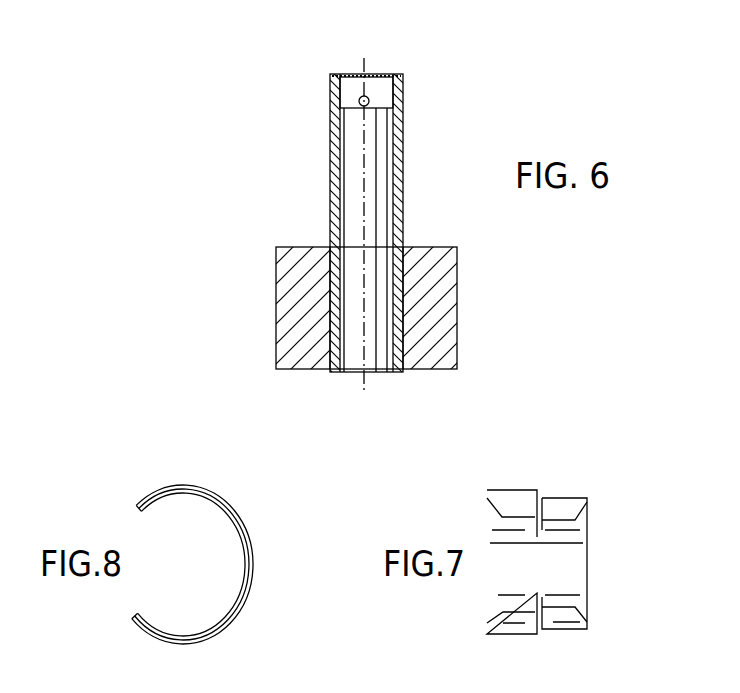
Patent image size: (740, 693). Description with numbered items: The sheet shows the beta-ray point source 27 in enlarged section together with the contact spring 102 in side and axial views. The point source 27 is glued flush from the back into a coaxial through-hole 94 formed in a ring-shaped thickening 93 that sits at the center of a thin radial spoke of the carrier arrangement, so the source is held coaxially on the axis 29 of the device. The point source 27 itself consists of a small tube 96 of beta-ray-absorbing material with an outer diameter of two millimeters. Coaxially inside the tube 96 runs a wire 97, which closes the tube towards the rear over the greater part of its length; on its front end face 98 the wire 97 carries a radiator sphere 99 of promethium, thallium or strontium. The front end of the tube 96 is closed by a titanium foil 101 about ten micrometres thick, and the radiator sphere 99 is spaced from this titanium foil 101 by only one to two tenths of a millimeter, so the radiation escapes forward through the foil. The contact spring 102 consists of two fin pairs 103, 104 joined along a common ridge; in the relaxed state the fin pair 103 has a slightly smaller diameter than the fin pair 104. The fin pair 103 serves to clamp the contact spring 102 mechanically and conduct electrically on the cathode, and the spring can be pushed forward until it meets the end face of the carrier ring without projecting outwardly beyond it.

In FIG. 6, the point source 27 is at (318, 84).
In FIG. 6, the axis 29 is at (372, 388).
In FIG. 6, the ring-shaped thickening 93 is at (298, 300).
In FIG. 6, the through-hole 94 is at (328, 323).
In FIG. 6, the tube 96 is at (331, 133).
In FIG. 6, the wire 97 is at (373, 188).
In FIG. 6, the front end face 98 is at (382, 108).
In FIG. 6, the radiator sphere 99 is at (368, 96).
In FIG. 6, the titanium foil 101 is at (347, 73).
In FIG. 7, the contact spring 102 is at (573, 489).
In FIG. 8, the contact spring 102 is at (237, 503).
In FIG. 7, the fin pair 103 is at (567, 630).
In FIG. 8, the fin pair 103 is at (132, 611).
In FIG. 7, the fin pair 104 is at (502, 636).
In FIG. 8, the fin pair 104 is at (146, 629).